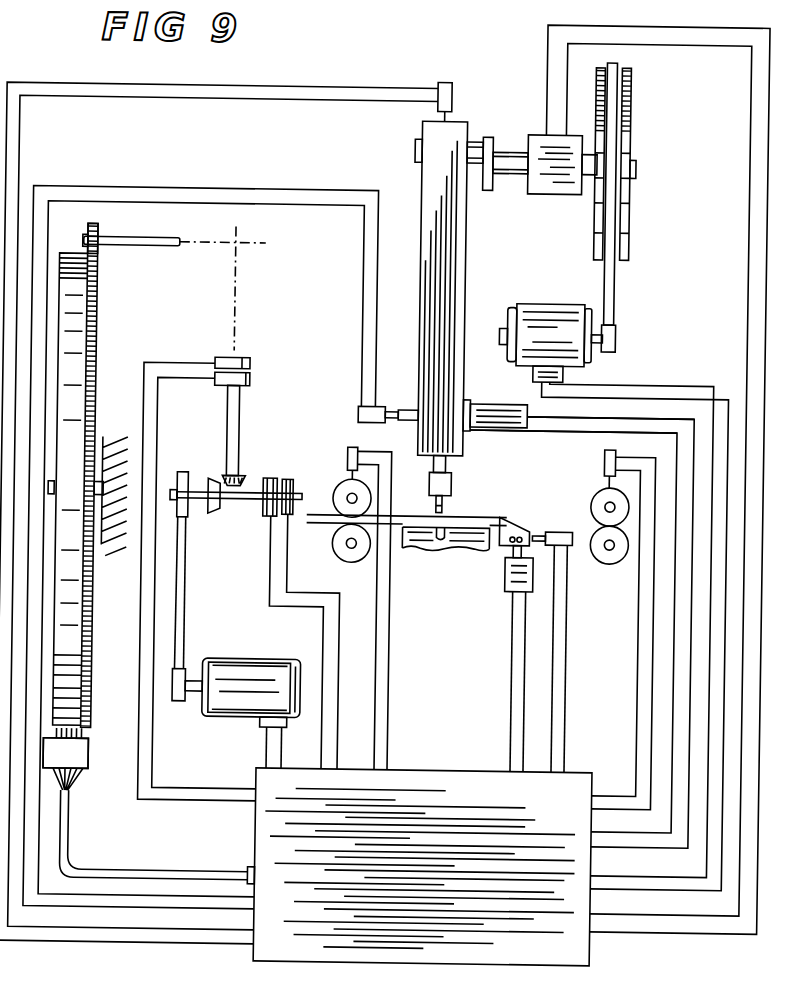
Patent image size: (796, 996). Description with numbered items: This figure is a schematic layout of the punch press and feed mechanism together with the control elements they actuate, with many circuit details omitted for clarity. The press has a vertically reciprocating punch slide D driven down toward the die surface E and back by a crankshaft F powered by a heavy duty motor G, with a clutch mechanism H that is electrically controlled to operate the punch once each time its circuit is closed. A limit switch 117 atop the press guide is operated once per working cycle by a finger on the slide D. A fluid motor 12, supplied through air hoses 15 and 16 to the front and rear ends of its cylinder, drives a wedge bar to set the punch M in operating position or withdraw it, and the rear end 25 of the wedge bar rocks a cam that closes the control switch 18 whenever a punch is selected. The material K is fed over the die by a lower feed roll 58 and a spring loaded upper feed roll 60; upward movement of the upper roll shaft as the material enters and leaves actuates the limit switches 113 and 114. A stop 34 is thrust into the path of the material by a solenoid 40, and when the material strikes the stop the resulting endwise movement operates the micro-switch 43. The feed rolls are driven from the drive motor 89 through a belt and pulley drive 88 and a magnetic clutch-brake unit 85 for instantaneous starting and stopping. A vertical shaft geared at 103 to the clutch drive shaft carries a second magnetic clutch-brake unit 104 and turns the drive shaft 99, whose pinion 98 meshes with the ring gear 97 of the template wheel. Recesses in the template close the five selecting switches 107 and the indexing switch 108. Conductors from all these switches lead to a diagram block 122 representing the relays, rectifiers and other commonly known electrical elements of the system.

The limit switch 117 is at (446, 97).
The crankshaft F is at (499, 146).
The clutch mechanism H is at (560, 192).
The punch slide D is at (463, 266).
The motor G is at (556, 302).
The pinion 98 is at (96, 232).
The drive shaft 99 is at (140, 250).
The ring gear 97 is at (98, 350).
The magnetic clutch-brake unit 104 is at (250, 375).
The control switch 18 is at (357, 414).
The rear end of wedge bar 25 is at (402, 409).
The fluid motor 12 is at (506, 404).
The air hose 15 is at (604, 416).
The air hose 16 is at (528, 432).
The limit switch 113 is at (347, 456).
The gear 103 is at (218, 478).
The magnetic clutch-brake unit 85 is at (288, 478).
The upper feed roll 60 is at (338, 486).
The punch M is at (452, 483).
The material K is at (505, 517).
The stop 34 is at (518, 530).
The limit switch 114 is at (604, 462).
The lower feed roll 58 is at (334, 549).
The micro-switch 43 is at (572, 548).
The die surface E is at (466, 550).
The solenoid 40 is at (506, 582).
The belt and pulley drive 88 is at (187, 602).
The drive motor 89 is at (278, 646).
The selecting switches 107 is at (66, 759).
The indexing switch 108 is at (65, 753).
The diagram block 122 is at (372, 965).